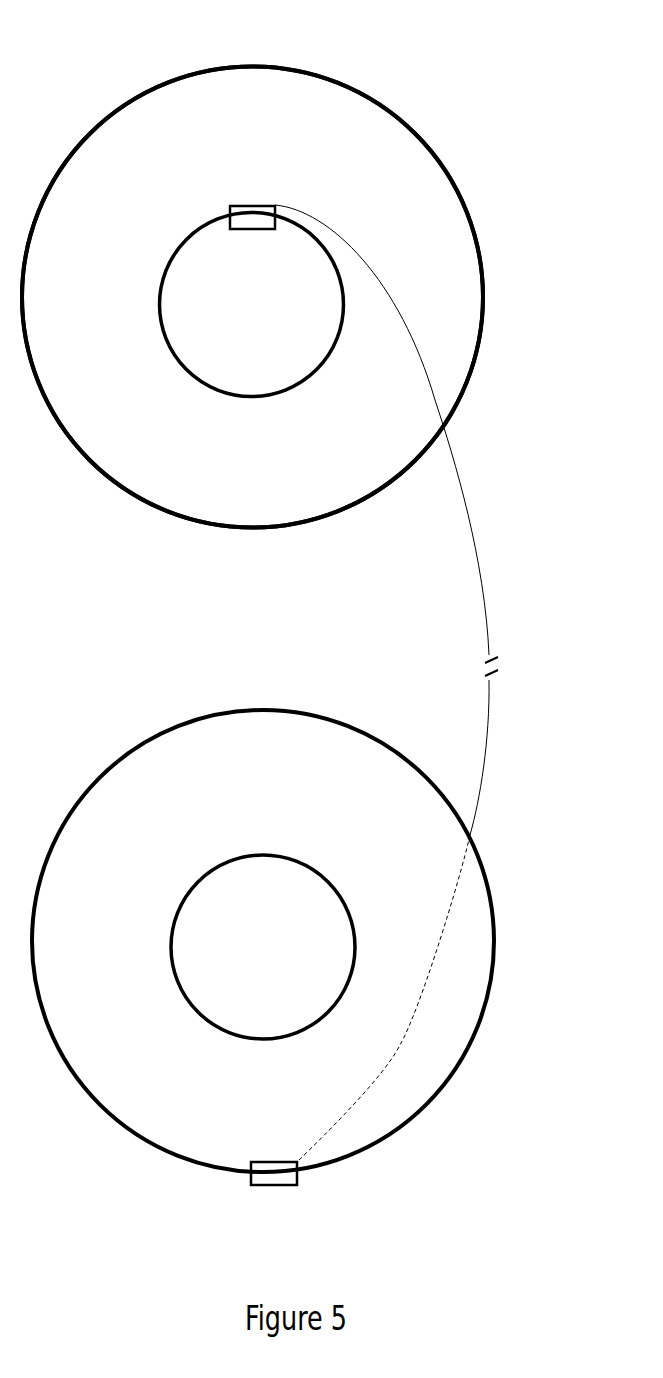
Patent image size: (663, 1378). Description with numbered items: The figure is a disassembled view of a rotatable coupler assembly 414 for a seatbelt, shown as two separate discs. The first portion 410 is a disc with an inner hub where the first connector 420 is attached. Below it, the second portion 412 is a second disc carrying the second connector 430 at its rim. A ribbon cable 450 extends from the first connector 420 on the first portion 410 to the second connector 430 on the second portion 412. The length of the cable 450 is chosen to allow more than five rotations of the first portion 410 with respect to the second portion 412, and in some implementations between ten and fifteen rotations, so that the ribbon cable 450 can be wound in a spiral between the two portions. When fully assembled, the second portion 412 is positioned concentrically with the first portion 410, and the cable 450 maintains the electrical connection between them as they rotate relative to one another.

The wireless charging arrangement 414 is at (165, 52).
The first portion 410 is at (337, 77).
The second portion 412 is at (349, 714).
The first connector 420 is at (259, 230).
The second connector 430 is at (277, 1186).
The ribbon cable 450 is at (468, 497).